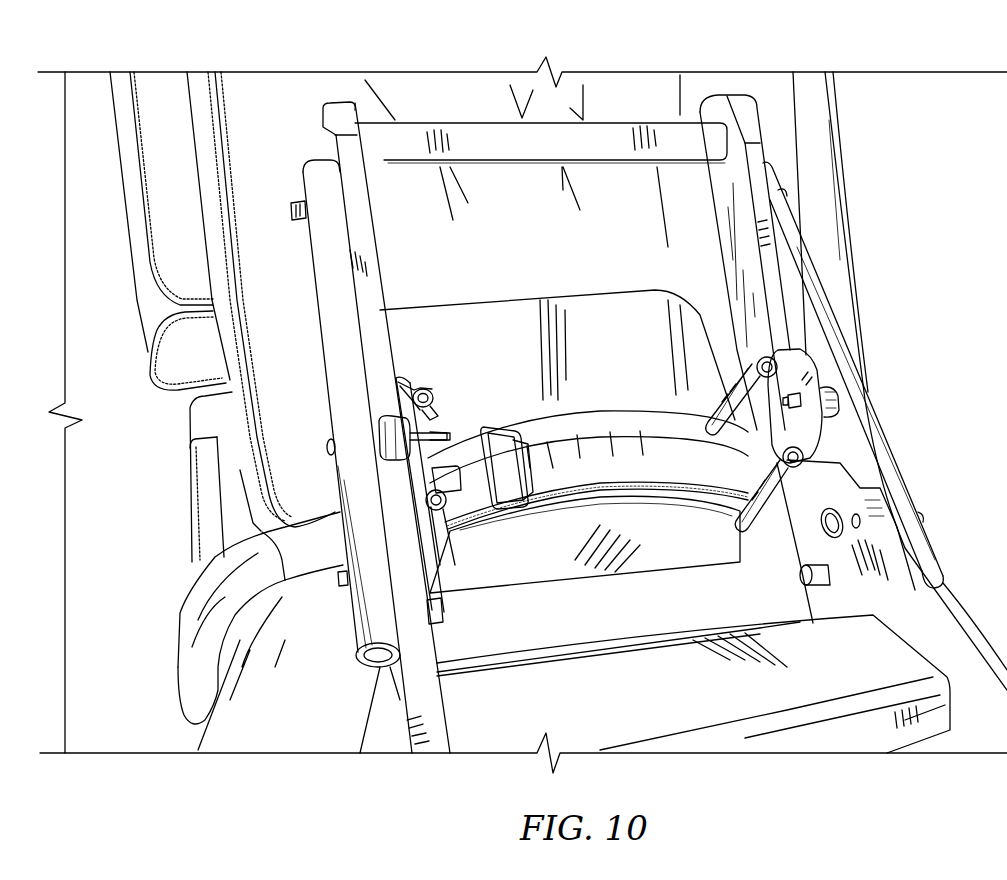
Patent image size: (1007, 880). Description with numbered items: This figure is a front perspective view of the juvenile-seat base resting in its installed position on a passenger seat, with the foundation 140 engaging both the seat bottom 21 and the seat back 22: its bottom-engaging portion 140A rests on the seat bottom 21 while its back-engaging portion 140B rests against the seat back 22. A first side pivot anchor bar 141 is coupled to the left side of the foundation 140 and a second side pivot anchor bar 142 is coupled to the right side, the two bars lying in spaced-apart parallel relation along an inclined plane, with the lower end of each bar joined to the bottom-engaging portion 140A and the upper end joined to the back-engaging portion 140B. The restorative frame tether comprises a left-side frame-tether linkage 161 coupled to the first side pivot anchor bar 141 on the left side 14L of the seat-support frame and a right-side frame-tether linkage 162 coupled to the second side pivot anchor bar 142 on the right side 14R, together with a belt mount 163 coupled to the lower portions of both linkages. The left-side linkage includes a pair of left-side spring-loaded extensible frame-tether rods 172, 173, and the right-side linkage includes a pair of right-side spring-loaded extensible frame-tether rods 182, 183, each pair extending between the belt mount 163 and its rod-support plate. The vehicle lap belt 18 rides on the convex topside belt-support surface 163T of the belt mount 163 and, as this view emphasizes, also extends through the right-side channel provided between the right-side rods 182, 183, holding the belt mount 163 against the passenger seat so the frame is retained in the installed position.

The seat back 22 is at (258, 97).
The seat bottom 21 is at (290, 732).
The left side of seat-support frame 14L is at (350, 434).
The right side of seat-support frame 14R is at (856, 392).
The first side pivot anchor bar 141 is at (363, 596).
The second side pivot anchor bar 142 is at (907, 510).
The left-side frame-tether linkage 161 is at (388, 373).
The right-side frame-tether linkage 162 is at (830, 356).
The belt mount 163 is at (538, 528).
The topside belt-support surface 163T is at (635, 493).
The left-side spring-loaded extensible frame-tether rod 172 is at (433, 552).
The left-side spring-loaded extensible frame-tether rod 173 is at (420, 392).
The vehicle lap belt 18 is at (592, 400).
The right-side spring-loaded extensible frame-tether rod 182 is at (785, 520).
The right-side spring-loaded extensible frame-tether rod 183 is at (745, 370).
The foundation 140 is at (742, 699).
The bottom-engaging portion 140A is at (848, 682).
The back-engaging portion 140B is at (727, 237).